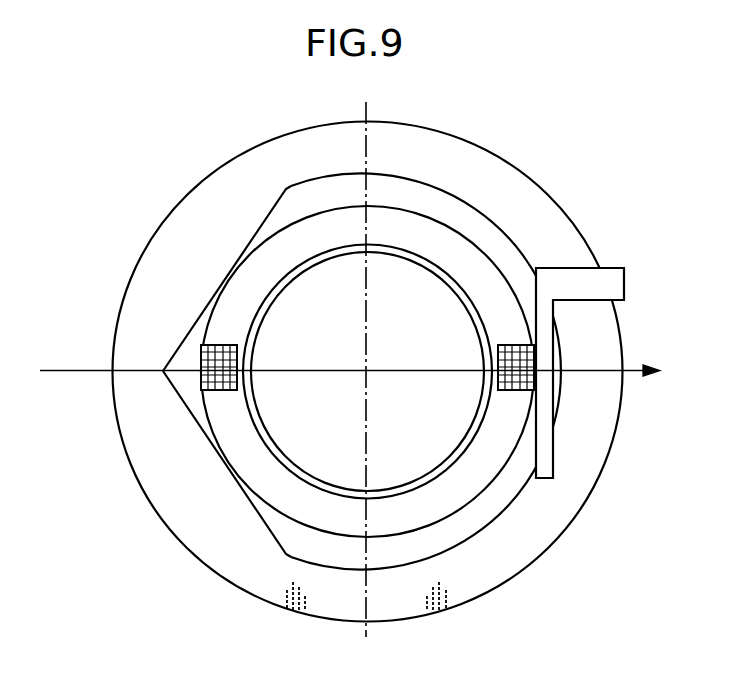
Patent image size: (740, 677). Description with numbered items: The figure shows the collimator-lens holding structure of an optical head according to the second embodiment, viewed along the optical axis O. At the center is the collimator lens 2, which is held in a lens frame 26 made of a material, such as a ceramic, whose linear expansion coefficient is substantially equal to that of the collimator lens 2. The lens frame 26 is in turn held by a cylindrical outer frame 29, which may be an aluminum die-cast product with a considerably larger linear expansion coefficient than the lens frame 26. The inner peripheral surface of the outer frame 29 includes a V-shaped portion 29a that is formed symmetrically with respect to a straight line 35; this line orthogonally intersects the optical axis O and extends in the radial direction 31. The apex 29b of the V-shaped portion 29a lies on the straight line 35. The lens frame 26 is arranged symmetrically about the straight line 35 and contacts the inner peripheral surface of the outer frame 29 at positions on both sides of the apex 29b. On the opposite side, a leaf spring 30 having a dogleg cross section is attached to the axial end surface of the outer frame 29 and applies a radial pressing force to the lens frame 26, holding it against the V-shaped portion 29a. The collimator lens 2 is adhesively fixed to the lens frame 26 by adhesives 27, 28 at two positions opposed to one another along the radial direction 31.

The collimator lens 2 is at (294, 298).
The lens frame 26 is at (465, 257).
The adhesive 27 is at (513, 373).
The adhesive 28 is at (218, 370).
The outer frame 29 is at (500, 545).
The V-shaped portion 29a is at (190, 258).
The apex 29b is at (160, 368).
The leaf spring 30 is at (621, 267).
The radial direction 31 is at (672, 372).
The straight line 35 is at (50, 376).
The optical axis O is at (367, 370).